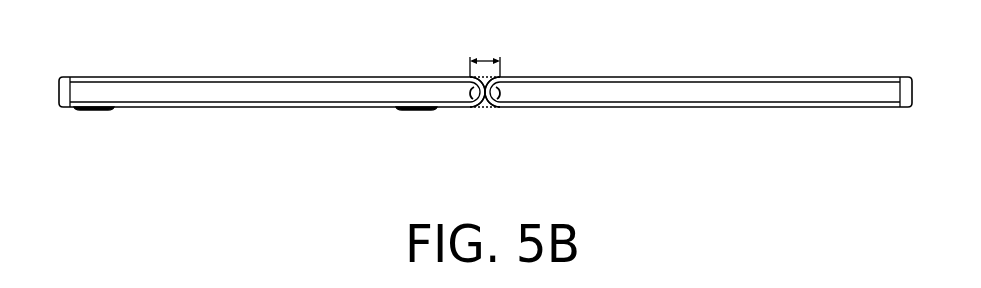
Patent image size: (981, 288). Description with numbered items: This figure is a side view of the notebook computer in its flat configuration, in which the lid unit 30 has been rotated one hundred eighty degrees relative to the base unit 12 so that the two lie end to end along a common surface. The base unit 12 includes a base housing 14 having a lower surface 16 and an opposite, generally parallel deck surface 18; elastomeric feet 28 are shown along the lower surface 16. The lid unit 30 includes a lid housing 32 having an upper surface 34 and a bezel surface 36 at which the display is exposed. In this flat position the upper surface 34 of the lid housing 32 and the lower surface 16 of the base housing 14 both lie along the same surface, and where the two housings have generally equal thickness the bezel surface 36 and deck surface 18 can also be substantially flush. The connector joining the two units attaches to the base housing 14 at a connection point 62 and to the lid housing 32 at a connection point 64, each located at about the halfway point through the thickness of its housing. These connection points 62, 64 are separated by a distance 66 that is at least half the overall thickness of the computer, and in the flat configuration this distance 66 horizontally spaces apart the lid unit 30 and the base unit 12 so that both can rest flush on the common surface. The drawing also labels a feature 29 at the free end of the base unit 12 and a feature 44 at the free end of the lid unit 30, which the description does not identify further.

The base unit 12 is at (271, 89).
The base housing 14 is at (180, 97).
The lower surface 16 is at (270, 94).
The deck surface 18 is at (278, 76).
The elastomeric feet 28 is at (97, 110).
The end wall of first device 29 is at (60, 108).
The lid unit 30 is at (698, 85).
The lid housing 32 is at (703, 93).
The upper surface 34 is at (612, 109).
The bezel surface 36 is at (588, 75).
The end wall of second device 44 is at (908, 107).
The connection point 62 is at (472, 106).
The connection point 64 is at (500, 108).
The distance 66 is at (486, 57).